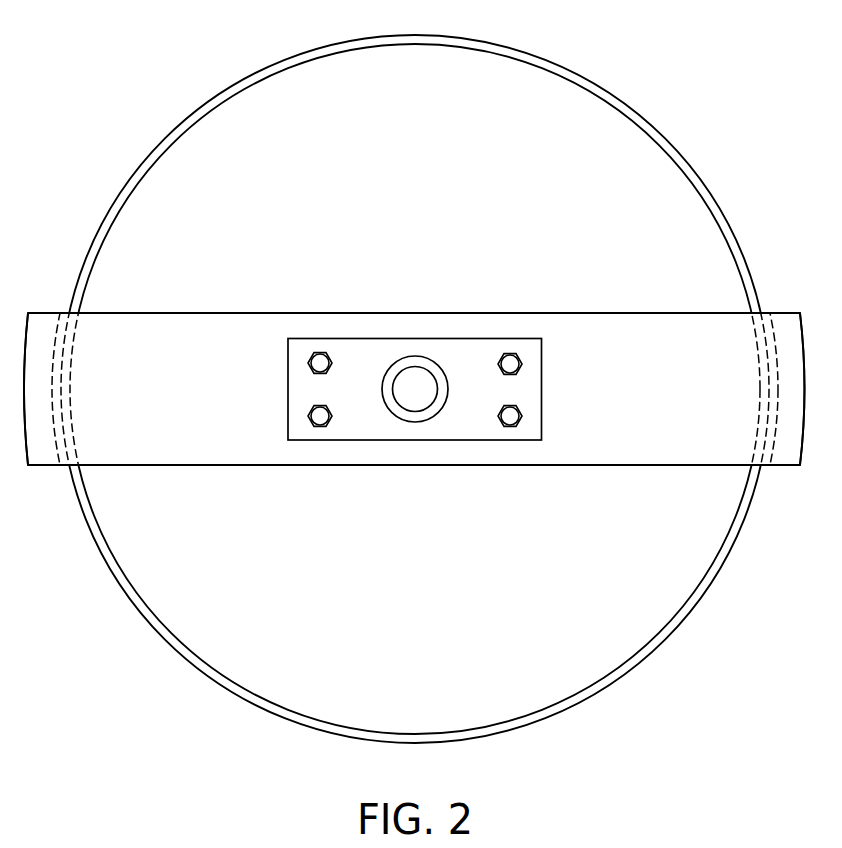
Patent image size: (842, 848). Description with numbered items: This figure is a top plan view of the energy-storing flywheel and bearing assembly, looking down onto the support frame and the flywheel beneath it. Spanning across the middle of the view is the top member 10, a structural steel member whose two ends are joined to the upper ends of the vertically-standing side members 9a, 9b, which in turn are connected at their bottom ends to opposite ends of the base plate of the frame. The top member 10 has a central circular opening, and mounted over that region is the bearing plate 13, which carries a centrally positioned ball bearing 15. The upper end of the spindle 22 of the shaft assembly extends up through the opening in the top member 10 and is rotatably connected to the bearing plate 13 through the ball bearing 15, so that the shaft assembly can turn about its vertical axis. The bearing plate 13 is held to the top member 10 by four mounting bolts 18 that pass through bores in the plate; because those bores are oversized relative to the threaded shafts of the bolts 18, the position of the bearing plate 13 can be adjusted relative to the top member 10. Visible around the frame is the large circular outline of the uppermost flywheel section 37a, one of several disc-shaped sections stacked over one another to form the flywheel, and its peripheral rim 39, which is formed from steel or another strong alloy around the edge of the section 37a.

The peripheral rim 39 is at (628, 112).
The flywheel section 37a is at (278, 225).
The top member 10 is at (167, 403).
The side member 9a is at (43, 332).
The side member 9b is at (785, 450).
The bearing plate 13 is at (343, 398).
The ball bearing 15 is at (433, 371).
The spindle 22 is at (416, 385).
The mounting bolt 18 is at (513, 364).